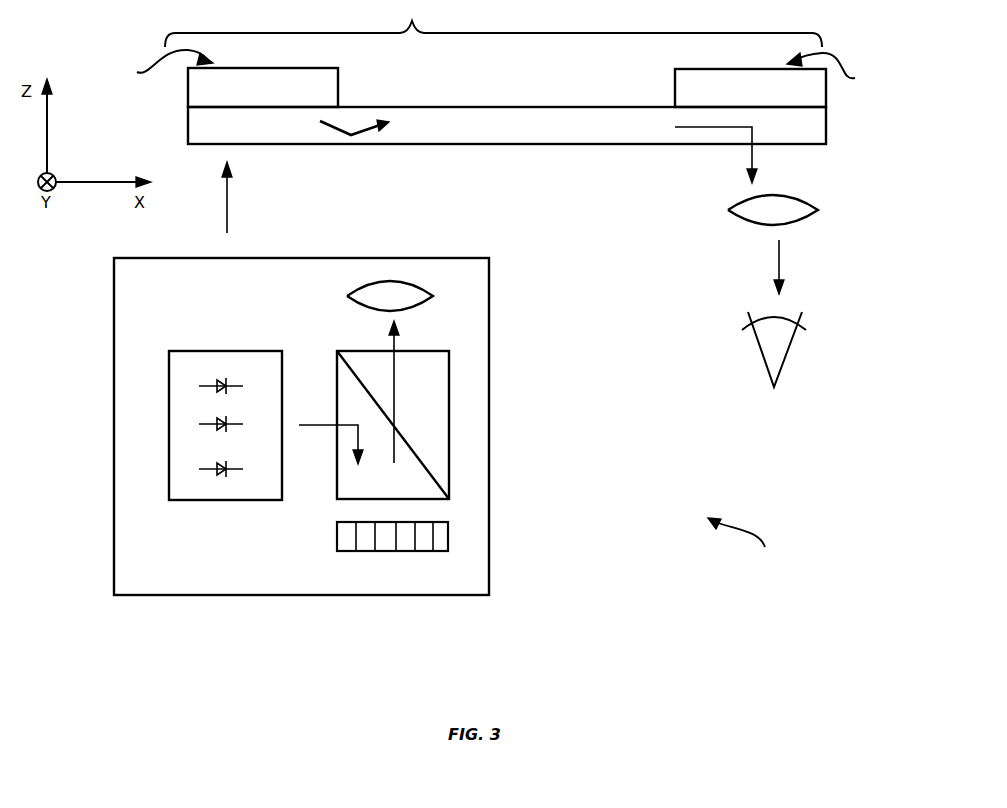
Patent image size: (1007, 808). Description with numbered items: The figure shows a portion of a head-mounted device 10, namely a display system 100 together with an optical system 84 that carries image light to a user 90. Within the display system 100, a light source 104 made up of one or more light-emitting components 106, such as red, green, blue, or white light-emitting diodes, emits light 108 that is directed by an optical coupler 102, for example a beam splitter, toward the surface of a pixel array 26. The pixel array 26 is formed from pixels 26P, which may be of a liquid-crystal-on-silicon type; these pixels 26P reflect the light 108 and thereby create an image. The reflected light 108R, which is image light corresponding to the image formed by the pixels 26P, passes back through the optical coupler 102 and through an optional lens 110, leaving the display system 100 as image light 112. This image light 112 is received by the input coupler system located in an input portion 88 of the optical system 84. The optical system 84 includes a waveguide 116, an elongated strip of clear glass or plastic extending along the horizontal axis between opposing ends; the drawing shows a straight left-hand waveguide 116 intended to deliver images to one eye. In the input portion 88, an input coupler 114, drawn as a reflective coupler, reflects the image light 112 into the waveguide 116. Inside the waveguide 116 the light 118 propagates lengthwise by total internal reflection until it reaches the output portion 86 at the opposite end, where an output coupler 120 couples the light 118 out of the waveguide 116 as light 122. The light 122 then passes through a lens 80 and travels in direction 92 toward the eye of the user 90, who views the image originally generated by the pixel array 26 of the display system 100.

The device 10 is at (742, 546).
The pixel array 26 is at (448, 534).
The pixels 26P is at (424, 543).
The lens 80 is at (813, 205).
The optical system 84 is at (493, 23).
The output portion 86 is at (830, 64).
The input portion 88 is at (167, 61).
The user 90 is at (786, 363).
The direction 92 is at (779, 260).
The display system 100 is at (114, 482).
The optical coupler 102 is at (449, 440).
The light source 104 is at (200, 351).
The light-emitting components 106 is at (200, 423).
The light 108 is at (312, 424).
The reflected light 108R is at (394, 388).
The lens 110 is at (428, 302).
The image light 112 is at (228, 197).
The input coupler 114 is at (338, 90).
The waveguide 116 is at (550, 144).
The light 118 is at (362, 131).
The output coupler 120 is at (675, 90).
The light 122 is at (703, 128).